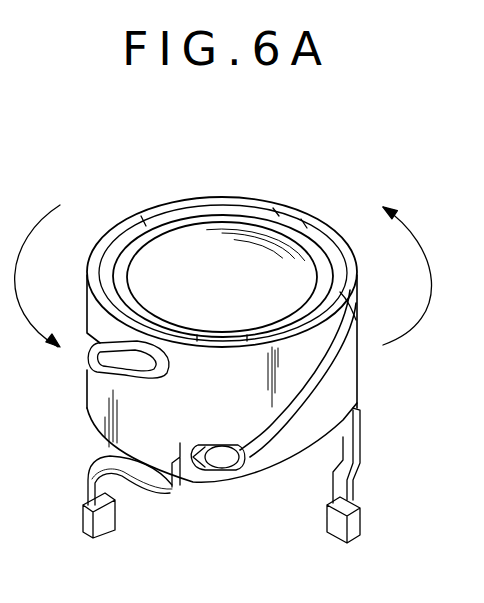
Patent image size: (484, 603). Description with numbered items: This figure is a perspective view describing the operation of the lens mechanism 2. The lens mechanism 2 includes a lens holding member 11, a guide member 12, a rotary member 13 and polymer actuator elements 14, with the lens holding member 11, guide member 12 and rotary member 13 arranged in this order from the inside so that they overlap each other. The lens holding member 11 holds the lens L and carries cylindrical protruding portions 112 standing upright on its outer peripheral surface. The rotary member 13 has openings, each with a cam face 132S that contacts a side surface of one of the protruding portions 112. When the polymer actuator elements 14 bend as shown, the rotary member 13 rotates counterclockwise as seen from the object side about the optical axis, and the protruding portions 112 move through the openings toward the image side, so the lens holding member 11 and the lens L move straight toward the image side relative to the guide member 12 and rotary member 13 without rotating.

The lens mechanism 2 is at (337, 180).
The lens holding member 11 is at (317, 257).
The guide member 12 is at (332, 290).
The rotary member 13 is at (343, 377).
The polymer actuator elements 14 is at (350, 452).
The protruding portions 112 is at (215, 456).
The cam face 132S is at (280, 440).
The lens L is at (196, 268).